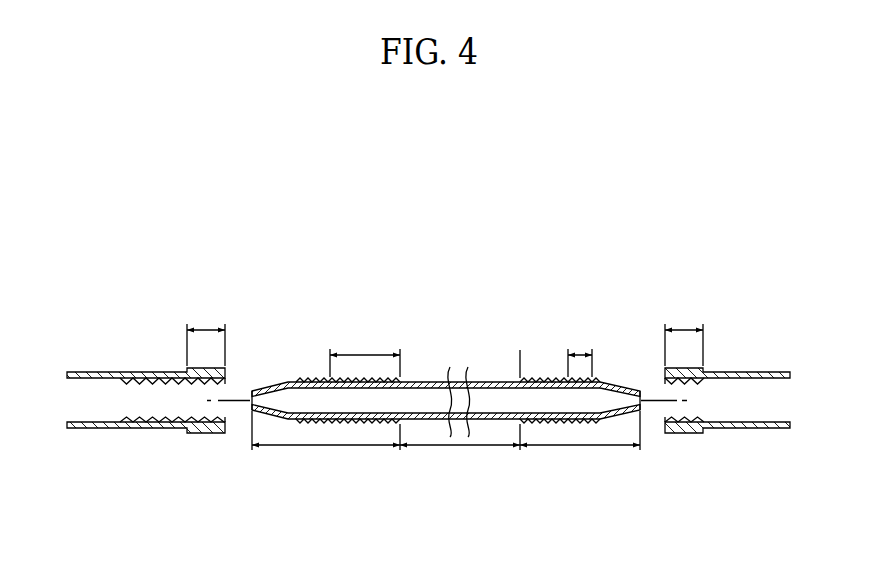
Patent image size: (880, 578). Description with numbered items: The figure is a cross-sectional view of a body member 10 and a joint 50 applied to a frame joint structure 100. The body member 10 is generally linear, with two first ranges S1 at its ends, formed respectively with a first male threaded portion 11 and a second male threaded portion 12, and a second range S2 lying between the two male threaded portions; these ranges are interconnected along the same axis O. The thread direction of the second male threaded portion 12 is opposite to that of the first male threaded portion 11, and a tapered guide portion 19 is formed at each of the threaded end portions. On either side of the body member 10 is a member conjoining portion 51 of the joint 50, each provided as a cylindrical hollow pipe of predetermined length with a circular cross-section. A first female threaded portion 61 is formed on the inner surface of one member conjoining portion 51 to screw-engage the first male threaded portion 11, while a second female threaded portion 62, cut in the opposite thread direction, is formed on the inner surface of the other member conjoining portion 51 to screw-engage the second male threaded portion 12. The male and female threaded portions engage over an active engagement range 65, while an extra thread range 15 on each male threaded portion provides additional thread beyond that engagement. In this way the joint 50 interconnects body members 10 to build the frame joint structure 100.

The frame joint structure 100 is at (445, 194).
The body member 10 is at (492, 382).
The first male threaded portion 11 is at (366, 423).
The second male threaded portion 12 is at (545, 423).
The extra thread range 15 is at (461, 350).
The guide portion 19 is at (276, 386).
The axis O is at (238, 400).
The joint 50 is at (133, 371).
The member conjoining portion 51 is at (102, 429).
The first female threaded portion 61 is at (200, 433).
The second female threaded portion 62 is at (680, 433).
The active engagement range 65 is at (445, 332).
The first range S1 is at (446, 444).
The second range S2 is at (460, 414).